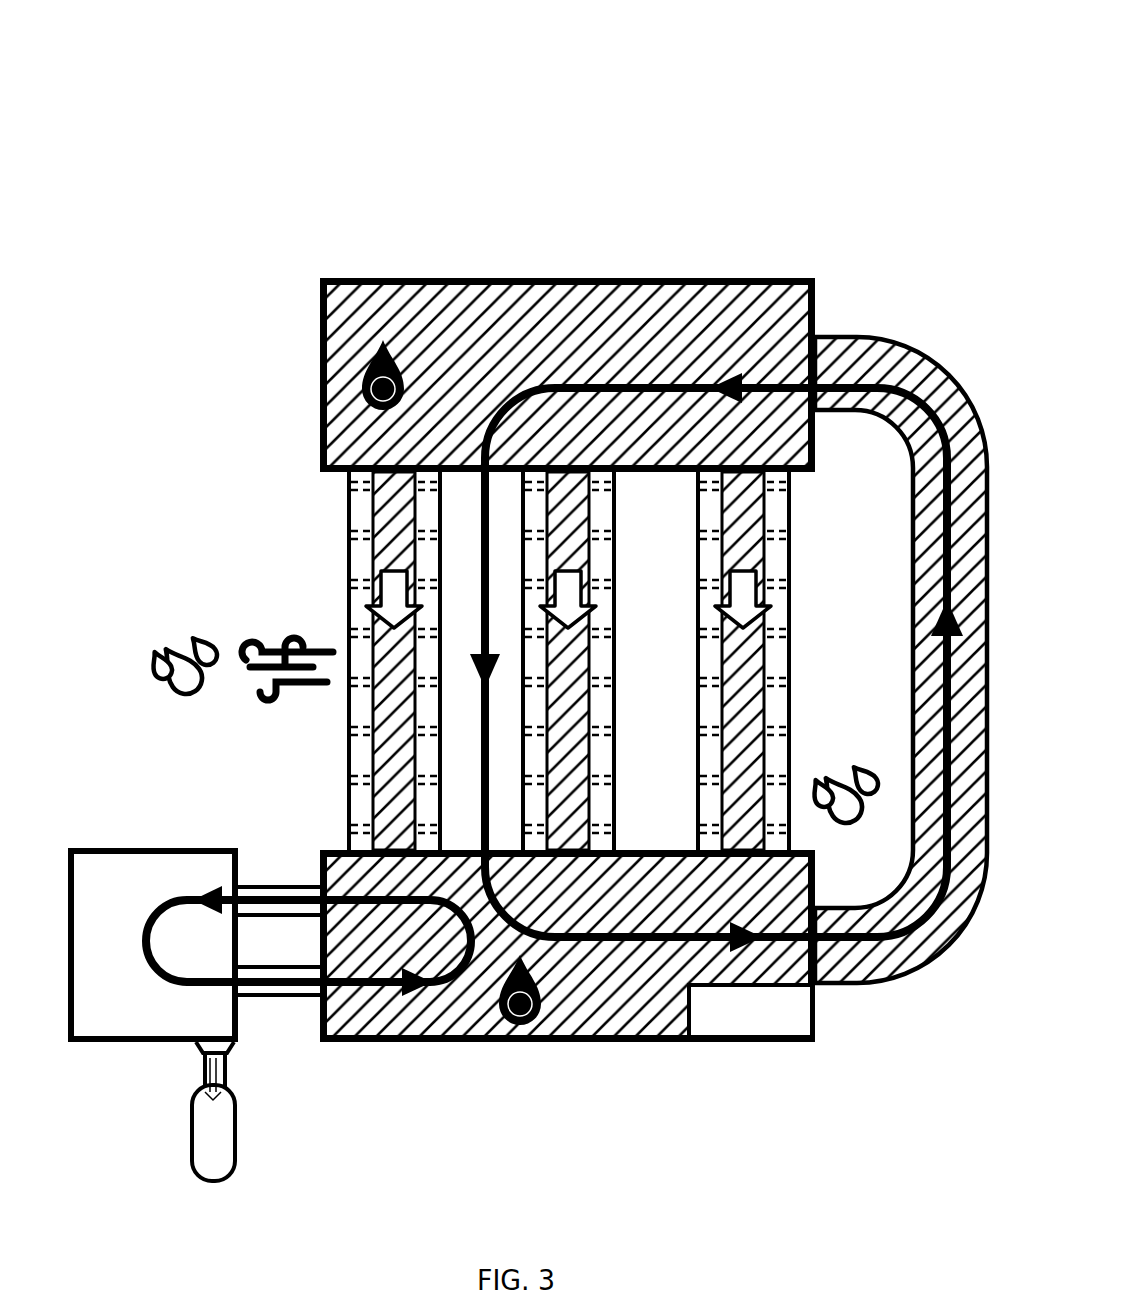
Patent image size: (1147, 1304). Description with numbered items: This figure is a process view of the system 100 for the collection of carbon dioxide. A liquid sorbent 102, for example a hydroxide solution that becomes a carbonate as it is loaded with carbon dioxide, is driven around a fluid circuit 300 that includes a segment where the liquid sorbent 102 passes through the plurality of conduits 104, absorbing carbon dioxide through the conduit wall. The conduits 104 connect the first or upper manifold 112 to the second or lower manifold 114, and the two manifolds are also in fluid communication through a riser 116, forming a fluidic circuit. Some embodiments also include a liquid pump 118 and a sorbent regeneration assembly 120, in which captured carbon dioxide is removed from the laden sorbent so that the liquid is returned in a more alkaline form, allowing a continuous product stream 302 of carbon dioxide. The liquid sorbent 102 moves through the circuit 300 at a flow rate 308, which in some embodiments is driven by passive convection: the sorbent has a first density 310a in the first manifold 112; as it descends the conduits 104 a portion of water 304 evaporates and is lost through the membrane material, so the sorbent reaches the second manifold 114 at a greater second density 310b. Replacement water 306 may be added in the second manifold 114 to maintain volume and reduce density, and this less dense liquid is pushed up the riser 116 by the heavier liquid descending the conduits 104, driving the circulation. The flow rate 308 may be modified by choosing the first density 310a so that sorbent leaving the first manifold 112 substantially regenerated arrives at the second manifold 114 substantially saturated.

The system 100 is at (814, 126).
The liquid sorbent 102 is at (653, 305).
The plurality of conduits 104 is at (285, 458).
The first manifold 112 is at (589, 352).
The second manifold 114 is at (622, 1008).
The riser 116 is at (921, 1012).
The liquid pump 118 is at (763, 1020).
The sorbent regeneration assembly 120 is at (132, 1017).
The fluid circuit 300 is at (770, 386).
The product stream 302 is at (236, 1105).
The water 304 is at (178, 696).
The replacement water 306 is at (873, 778).
The flow rate 308 is at (385, 598).
The first density 310a is at (398, 372).
The second density 310b is at (540, 1008).